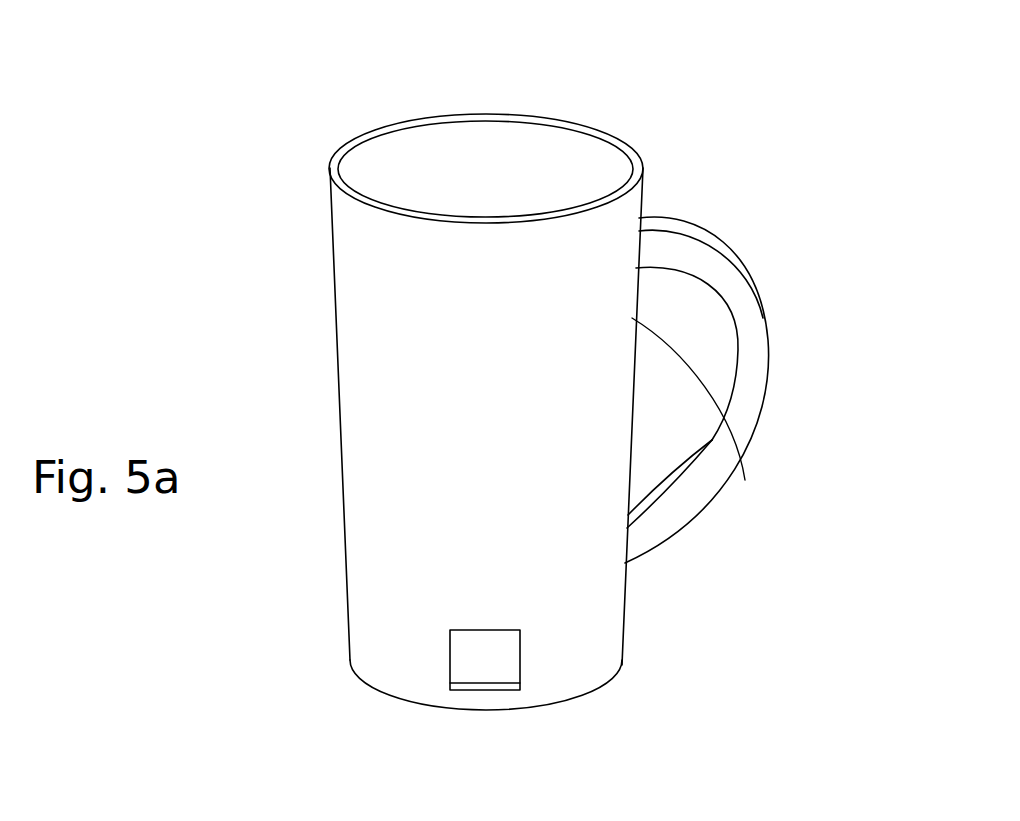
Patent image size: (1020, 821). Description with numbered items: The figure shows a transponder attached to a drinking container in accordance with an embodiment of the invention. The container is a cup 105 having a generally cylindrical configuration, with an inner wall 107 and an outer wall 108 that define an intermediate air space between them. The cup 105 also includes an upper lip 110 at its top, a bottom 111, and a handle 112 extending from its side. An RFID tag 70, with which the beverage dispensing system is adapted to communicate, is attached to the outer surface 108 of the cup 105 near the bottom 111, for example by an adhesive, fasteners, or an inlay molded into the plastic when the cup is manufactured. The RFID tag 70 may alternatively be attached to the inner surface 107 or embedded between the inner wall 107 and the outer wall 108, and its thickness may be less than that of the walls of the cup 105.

The RFID tag 70 is at (512, 668).
The cup 105 is at (335, 348).
The inner wall 107 is at (555, 163).
The outer wall 108 is at (745, 480).
The upper lip 110 is at (380, 133).
The bottom 111 is at (455, 712).
The handle 112 is at (717, 247).